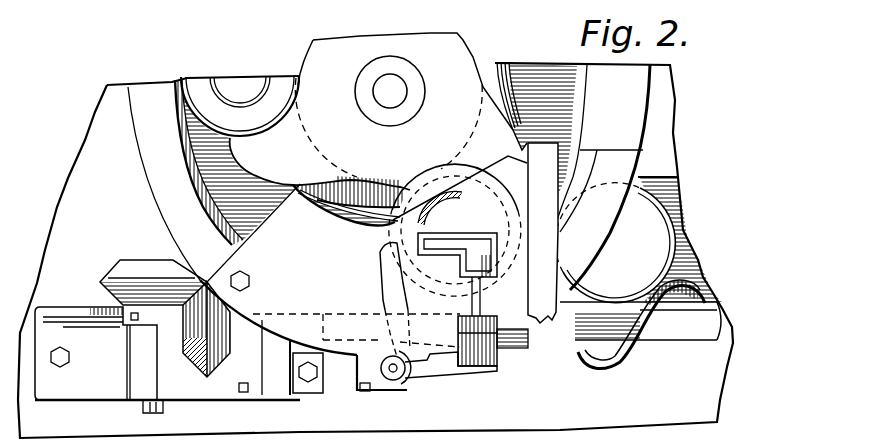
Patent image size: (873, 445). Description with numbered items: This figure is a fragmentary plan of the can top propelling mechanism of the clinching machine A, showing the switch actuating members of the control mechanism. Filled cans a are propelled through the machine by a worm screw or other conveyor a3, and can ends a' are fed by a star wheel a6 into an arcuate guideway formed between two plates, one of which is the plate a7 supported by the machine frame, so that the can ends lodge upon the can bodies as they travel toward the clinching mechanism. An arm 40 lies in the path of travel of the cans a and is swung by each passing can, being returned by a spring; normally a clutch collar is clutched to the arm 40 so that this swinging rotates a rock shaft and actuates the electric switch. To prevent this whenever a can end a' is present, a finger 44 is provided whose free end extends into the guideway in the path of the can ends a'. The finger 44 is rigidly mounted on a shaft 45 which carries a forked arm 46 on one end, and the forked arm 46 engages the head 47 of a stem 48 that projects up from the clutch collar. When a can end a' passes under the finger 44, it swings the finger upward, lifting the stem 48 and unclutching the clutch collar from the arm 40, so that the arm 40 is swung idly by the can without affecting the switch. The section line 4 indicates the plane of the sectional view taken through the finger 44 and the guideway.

The clinching machine A is at (742, 152).
The filled can a is at (638, 243).
The can end a' is at (351, 171).
The worm screw conveyor a3 is at (728, 316).
The star wheel a6 is at (378, 111).
The plate a7 is at (237, 181).
The section line 4- 4 is at (364, 241).
The arm 40 is at (380, 282).
The finger 44 is at (455, 243).
The shaft 45 is at (473, 297).
The forked arm 46 is at (433, 356).
The head 47 is at (395, 380).
The stem 48 is at (380, 368).